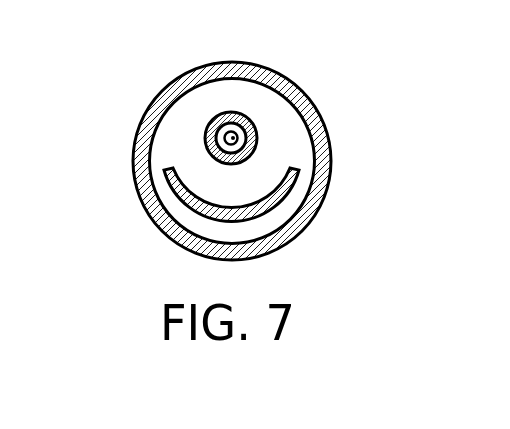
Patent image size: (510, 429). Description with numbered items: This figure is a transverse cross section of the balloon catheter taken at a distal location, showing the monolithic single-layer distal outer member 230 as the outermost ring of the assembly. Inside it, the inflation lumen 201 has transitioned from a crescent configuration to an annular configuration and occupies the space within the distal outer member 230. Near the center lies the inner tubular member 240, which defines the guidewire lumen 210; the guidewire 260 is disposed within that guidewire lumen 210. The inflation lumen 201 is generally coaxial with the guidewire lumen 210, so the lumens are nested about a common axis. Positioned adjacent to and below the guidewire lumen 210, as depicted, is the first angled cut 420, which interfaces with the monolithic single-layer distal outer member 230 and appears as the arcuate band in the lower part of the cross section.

The inflation lumen 201 is at (195, 108).
The monolithic single-layer distal outer member 230 is at (303, 95).
The inner tubular member 240 is at (211, 138).
The guidewire 260 is at (233, 138).
The guidewire lumen 210 is at (237, 150).
The first angled cut 420 is at (187, 207).